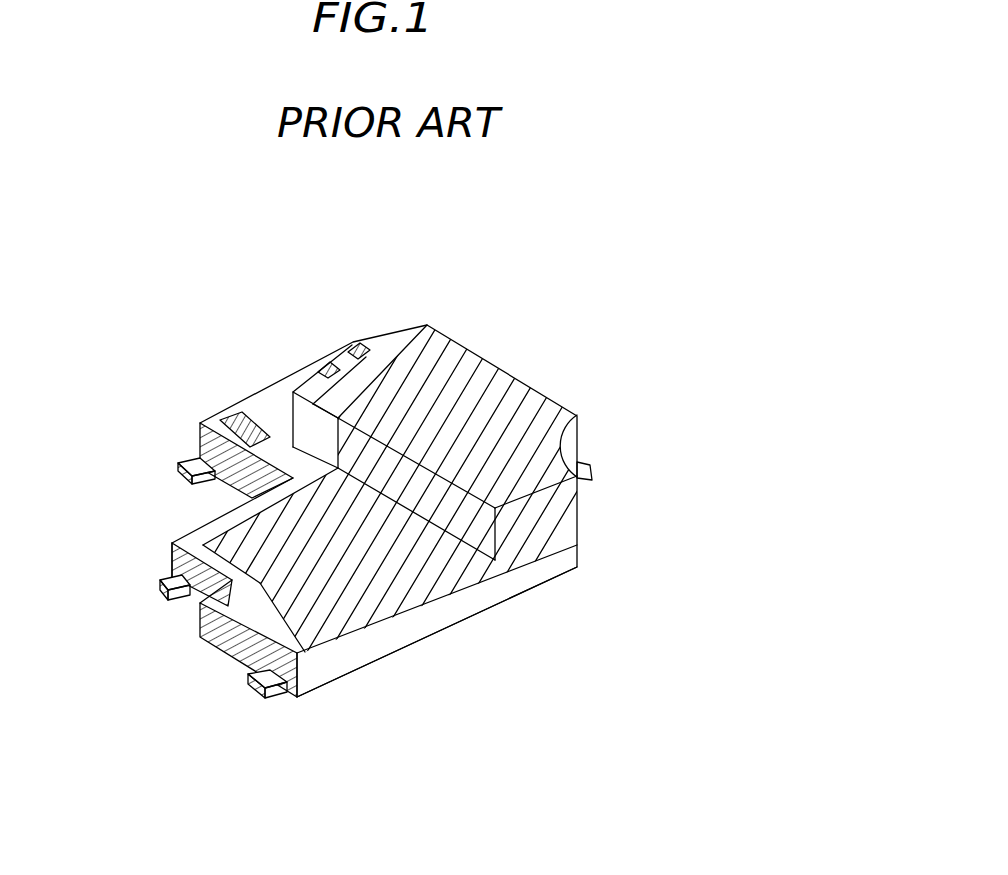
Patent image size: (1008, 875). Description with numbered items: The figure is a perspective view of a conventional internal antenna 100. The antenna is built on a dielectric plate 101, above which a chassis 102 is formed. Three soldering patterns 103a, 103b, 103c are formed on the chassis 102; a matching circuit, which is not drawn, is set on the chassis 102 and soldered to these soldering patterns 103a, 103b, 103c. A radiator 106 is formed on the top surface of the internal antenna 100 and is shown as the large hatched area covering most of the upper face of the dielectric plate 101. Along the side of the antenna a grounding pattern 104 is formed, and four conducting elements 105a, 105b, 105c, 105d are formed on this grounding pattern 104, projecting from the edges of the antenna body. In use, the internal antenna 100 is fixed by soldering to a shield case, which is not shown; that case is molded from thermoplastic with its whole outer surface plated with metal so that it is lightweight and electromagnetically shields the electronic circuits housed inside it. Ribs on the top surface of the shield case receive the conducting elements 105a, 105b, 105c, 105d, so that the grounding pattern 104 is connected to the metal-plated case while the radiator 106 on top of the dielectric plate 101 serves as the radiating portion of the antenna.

The internal antenna 100 is at (563, 443).
The dielectric plate 101 is at (518, 585).
The chassis 102 is at (267, 395).
The soldering pattern 103a is at (236, 426).
The soldering pattern 103b is at (325, 365).
The soldering pattern 103c is at (358, 352).
The grounding pattern 104 is at (240, 657).
The conducting element 105a is at (270, 697).
The conducting element 105b is at (157, 590).
The conducting element 105c is at (182, 477).
The conducting element 105d is at (585, 472).
The radiator 106 is at (542, 395).